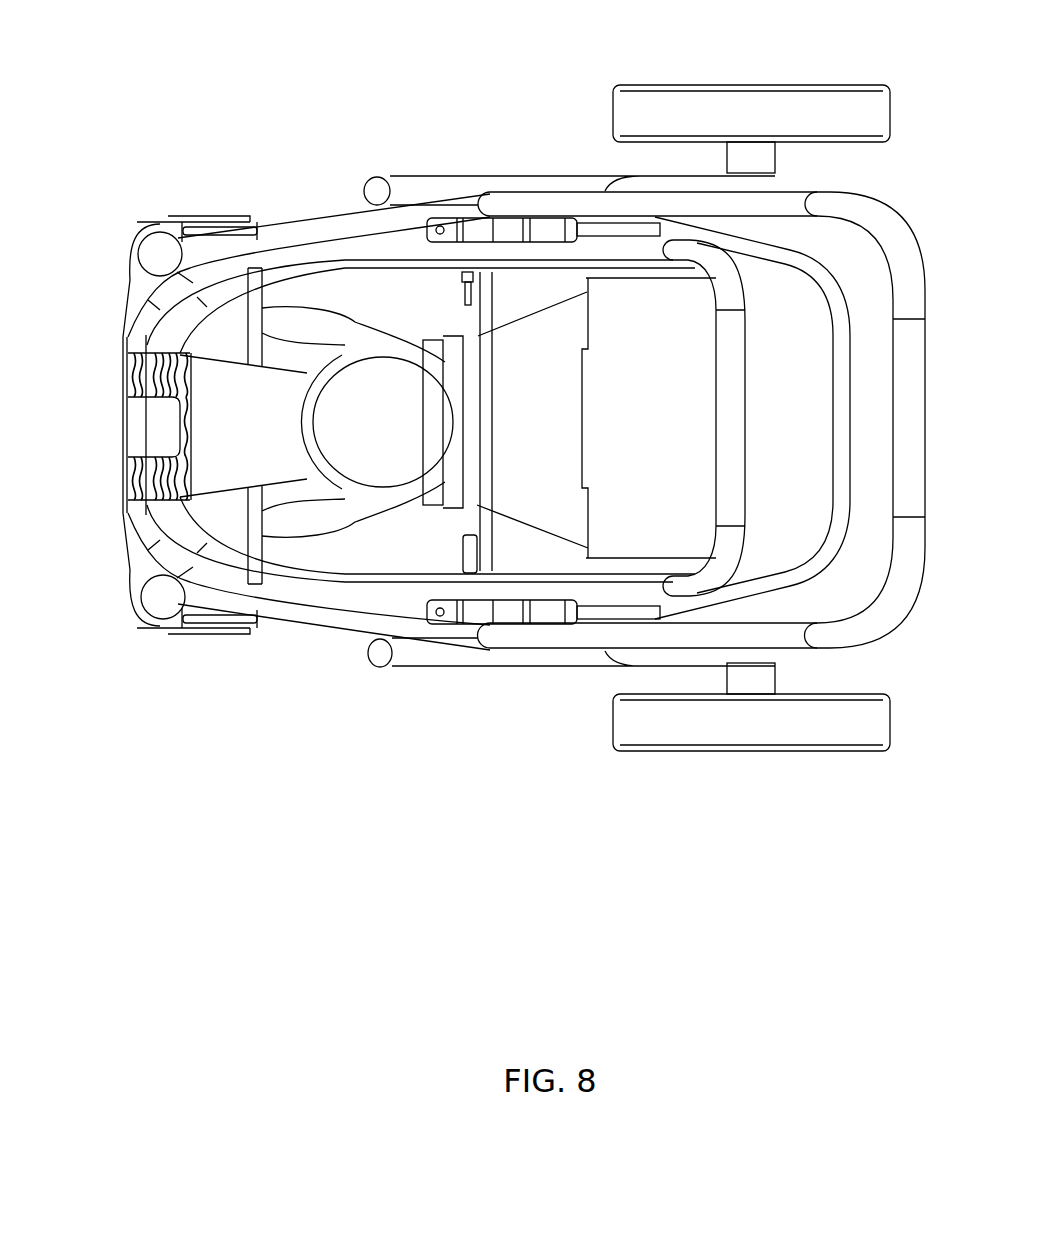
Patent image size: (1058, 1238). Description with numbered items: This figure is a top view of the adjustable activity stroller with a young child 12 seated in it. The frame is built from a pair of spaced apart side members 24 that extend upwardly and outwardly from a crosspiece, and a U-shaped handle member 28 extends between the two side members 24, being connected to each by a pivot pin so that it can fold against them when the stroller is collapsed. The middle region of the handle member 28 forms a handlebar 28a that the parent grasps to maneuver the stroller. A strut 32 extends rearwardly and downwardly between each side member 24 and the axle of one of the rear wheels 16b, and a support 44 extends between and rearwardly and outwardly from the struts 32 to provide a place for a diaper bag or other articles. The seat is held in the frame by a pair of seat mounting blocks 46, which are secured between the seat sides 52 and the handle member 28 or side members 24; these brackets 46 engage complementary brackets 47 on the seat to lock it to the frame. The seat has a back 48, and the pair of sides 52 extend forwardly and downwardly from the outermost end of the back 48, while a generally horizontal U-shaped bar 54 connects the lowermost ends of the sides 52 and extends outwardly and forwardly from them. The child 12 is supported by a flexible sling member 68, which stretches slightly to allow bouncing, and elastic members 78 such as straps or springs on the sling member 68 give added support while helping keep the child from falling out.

The child 12 is at (358, 437).
The rear wheels 16b is at (682, 103).
The side members 24 is at (341, 232).
The handle member 28 is at (752, 205).
The handlebar 28a is at (905, 452).
The strut 32 is at (508, 178).
The support 44 is at (838, 297).
The seat mounting blocks 46 is at (548, 225).
The complementary brackets 47 is at (600, 253).
The back 48 is at (672, 372).
The sides 52 is at (413, 222).
The U-shaped bar 54 is at (226, 256).
The sling member 68 is at (218, 437).
The elastic members 78 is at (153, 377).